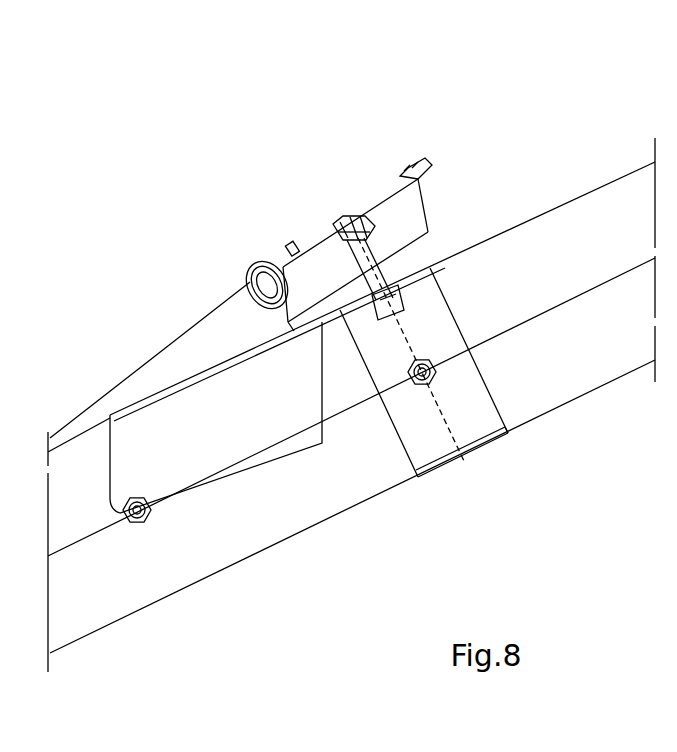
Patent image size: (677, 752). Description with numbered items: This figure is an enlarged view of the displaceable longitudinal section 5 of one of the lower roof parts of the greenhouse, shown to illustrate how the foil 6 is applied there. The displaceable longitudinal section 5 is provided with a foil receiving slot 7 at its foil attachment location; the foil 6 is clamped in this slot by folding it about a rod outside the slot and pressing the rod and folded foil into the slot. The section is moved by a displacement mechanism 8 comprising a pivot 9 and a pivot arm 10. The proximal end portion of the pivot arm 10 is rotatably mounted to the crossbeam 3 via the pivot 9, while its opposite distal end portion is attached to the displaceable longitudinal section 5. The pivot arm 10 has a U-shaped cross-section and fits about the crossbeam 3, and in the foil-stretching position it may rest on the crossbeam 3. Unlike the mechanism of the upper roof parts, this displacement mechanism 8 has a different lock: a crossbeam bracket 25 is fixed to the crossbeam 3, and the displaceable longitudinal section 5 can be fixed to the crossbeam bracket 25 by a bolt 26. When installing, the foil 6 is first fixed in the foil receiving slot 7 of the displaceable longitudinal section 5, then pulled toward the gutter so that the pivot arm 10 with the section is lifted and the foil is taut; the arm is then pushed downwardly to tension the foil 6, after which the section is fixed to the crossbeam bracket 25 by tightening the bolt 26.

The crossbeam 3 is at (355, 482).
The displaceable longitudinal section 5 is at (315, 242).
The foil 6 is at (143, 363).
The foil receiving slot 7 is at (262, 277).
The displacement mechanism 8 is at (266, 474).
The pivot 9 is at (140, 524).
The pivot arm 10 is at (200, 487).
The crossbeam bracket 25 is at (472, 432).
The bolt 26 is at (398, 248).